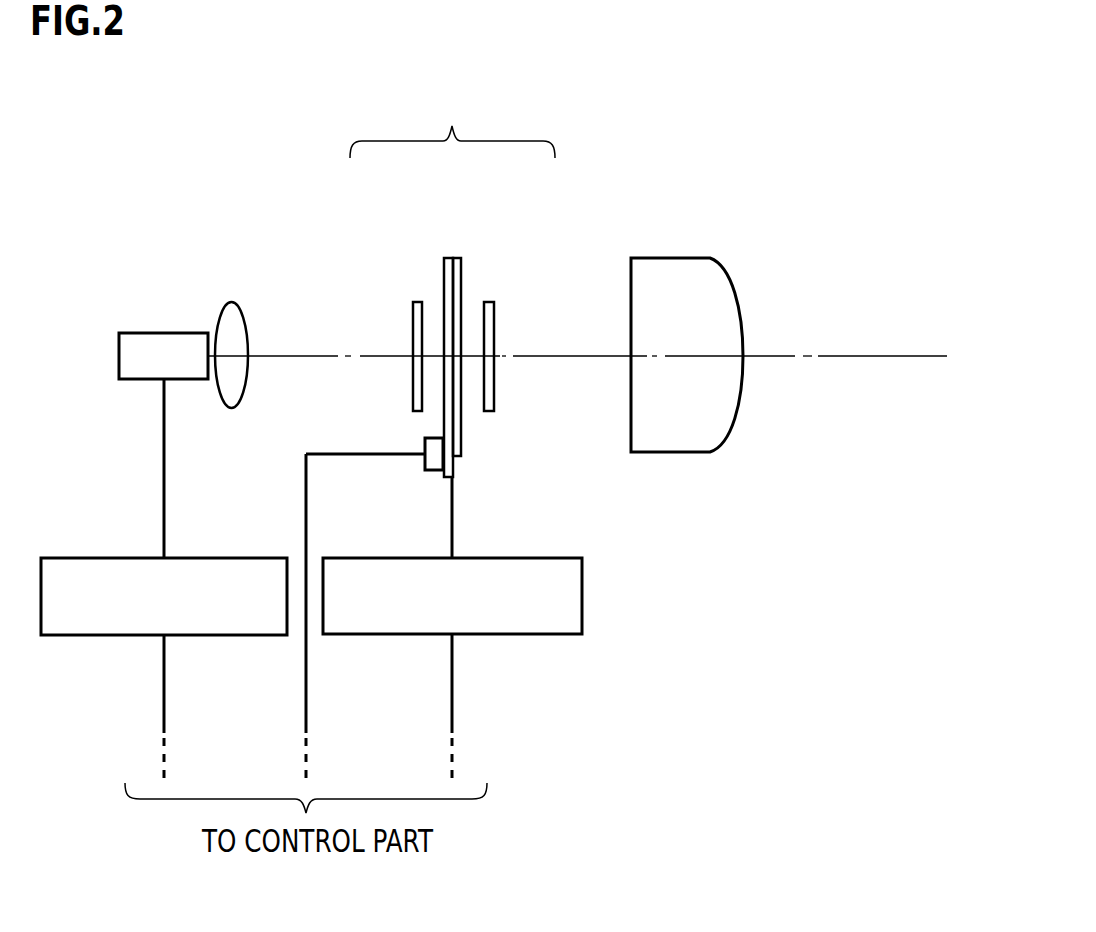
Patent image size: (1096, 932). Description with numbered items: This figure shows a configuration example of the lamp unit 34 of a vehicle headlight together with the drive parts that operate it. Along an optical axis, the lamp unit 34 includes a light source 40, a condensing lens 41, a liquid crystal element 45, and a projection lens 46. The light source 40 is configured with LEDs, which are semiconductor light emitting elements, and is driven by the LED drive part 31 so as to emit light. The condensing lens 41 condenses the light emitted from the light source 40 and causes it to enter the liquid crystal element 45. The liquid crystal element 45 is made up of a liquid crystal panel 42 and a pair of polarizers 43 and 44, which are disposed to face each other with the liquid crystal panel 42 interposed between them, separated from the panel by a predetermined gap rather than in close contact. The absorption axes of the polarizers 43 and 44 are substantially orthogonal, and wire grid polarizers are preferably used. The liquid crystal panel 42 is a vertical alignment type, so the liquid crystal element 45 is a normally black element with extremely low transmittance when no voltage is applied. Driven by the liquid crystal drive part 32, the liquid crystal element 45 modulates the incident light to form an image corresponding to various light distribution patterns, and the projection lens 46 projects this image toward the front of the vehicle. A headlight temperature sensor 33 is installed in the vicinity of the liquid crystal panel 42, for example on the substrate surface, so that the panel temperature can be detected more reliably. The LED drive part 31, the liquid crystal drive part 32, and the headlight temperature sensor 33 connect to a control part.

The LED drive part 31 is at (222, 558).
The liquid crystal drive part 32 is at (507, 558).
The headlight temperature sensor 33 is at (433, 470).
The lamp unit 34 is at (207, 191).
The light source 40 is at (138, 333).
The condensing lens 41 is at (233, 303).
The liquid crystal panel 42 is at (452, 258).
The polarizer 43 is at (417, 302).
The polarizer 44 is at (489, 302).
The liquid crystal element 45 is at (452, 121).
The projection lens 46 is at (683, 258).